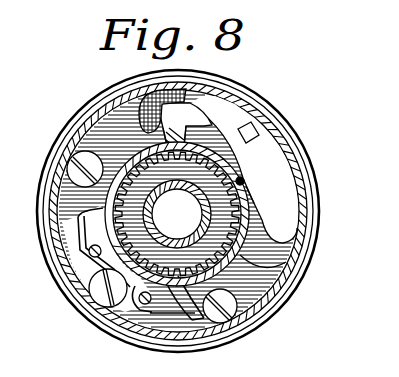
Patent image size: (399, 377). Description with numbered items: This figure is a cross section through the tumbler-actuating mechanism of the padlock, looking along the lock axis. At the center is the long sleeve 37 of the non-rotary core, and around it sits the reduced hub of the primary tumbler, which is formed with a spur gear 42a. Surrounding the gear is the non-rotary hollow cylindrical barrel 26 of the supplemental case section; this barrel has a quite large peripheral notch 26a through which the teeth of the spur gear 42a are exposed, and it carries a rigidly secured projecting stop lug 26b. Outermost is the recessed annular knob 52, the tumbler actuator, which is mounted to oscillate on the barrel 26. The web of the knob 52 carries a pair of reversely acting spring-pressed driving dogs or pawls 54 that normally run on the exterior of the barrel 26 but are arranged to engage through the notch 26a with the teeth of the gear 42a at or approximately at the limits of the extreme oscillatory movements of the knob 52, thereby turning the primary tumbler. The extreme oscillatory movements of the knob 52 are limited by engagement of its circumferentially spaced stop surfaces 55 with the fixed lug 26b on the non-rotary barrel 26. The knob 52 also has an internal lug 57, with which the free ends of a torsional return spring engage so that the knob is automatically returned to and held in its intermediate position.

The annular knob 52 is at (311, 253).
The hollow cylindrical barrel 26 is at (243, 180).
The peripheral notch 26a is at (263, 268).
The stop lug 26b is at (190, 100).
The sleeve 37 is at (237, 177).
The spur gear 42a is at (253, 197).
The driving dogs or pawls 54 is at (68, 158).
The stop surfaces 55 is at (184, 99).
The internal lug 57 is at (259, 128).